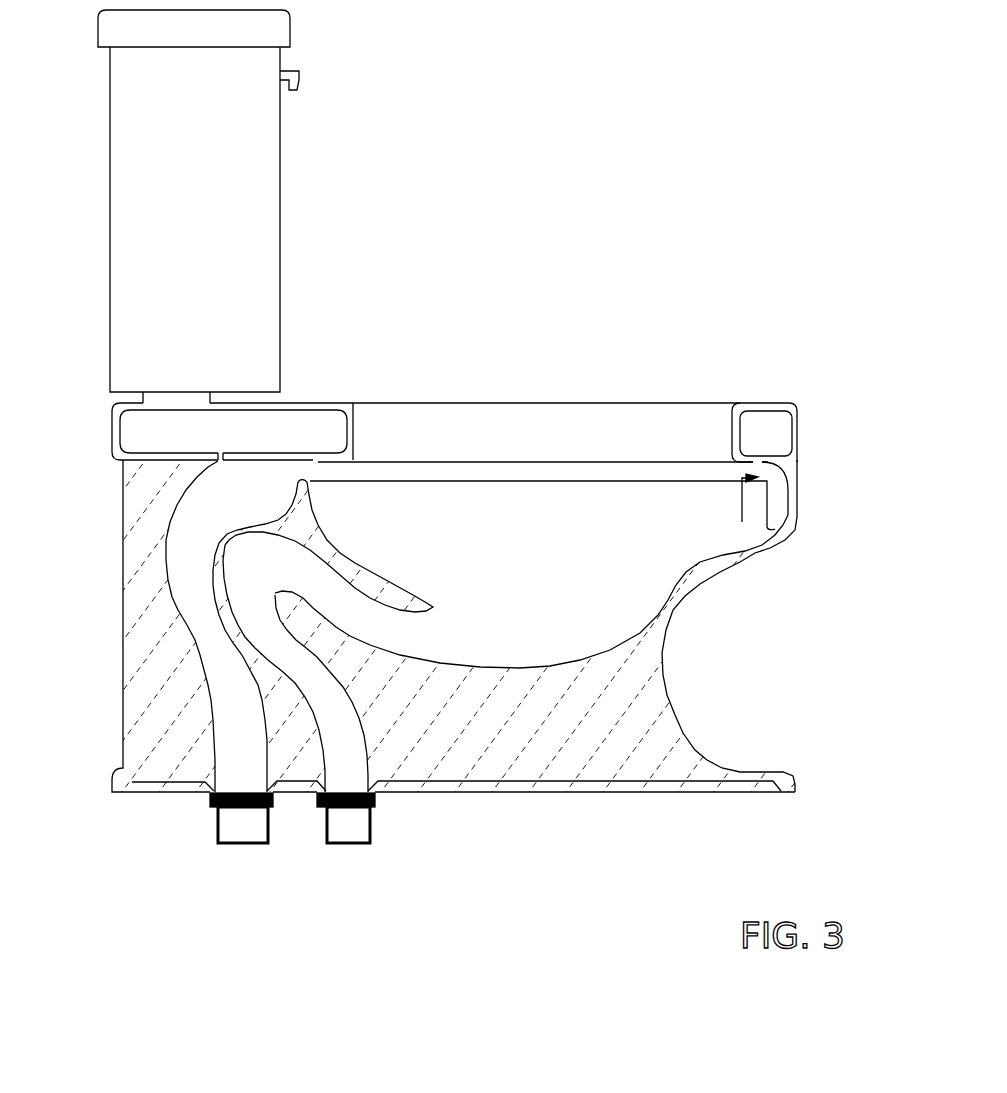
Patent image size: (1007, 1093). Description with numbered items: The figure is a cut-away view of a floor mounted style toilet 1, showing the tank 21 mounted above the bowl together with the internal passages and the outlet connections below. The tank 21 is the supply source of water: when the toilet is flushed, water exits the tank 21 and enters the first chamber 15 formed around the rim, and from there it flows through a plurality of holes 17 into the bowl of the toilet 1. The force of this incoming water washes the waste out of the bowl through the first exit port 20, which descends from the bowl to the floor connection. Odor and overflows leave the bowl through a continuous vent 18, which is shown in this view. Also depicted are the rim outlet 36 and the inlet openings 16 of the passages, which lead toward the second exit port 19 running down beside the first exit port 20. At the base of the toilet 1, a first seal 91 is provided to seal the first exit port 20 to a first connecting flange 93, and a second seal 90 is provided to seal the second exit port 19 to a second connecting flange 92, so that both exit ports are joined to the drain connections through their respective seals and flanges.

The toilet 1 is at (665, 672).
The first chamber 15 is at (778, 428).
The water inlet opening 16 is at (777, 492).
The plurality of holes 17 is at (317, 452).
The continuous vent 18 is at (468, 473).
The second exit port 19 is at (252, 748).
The first exit port 20 is at (347, 762).
The tank 21 is at (283, 190).
The rim outlet 36 is at (215, 450).
The second seal 90 is at (217, 810).
The first seal 91 is at (371, 812).
The second connecting flange 92 is at (242, 843).
The first connecting flange 93 is at (347, 843).